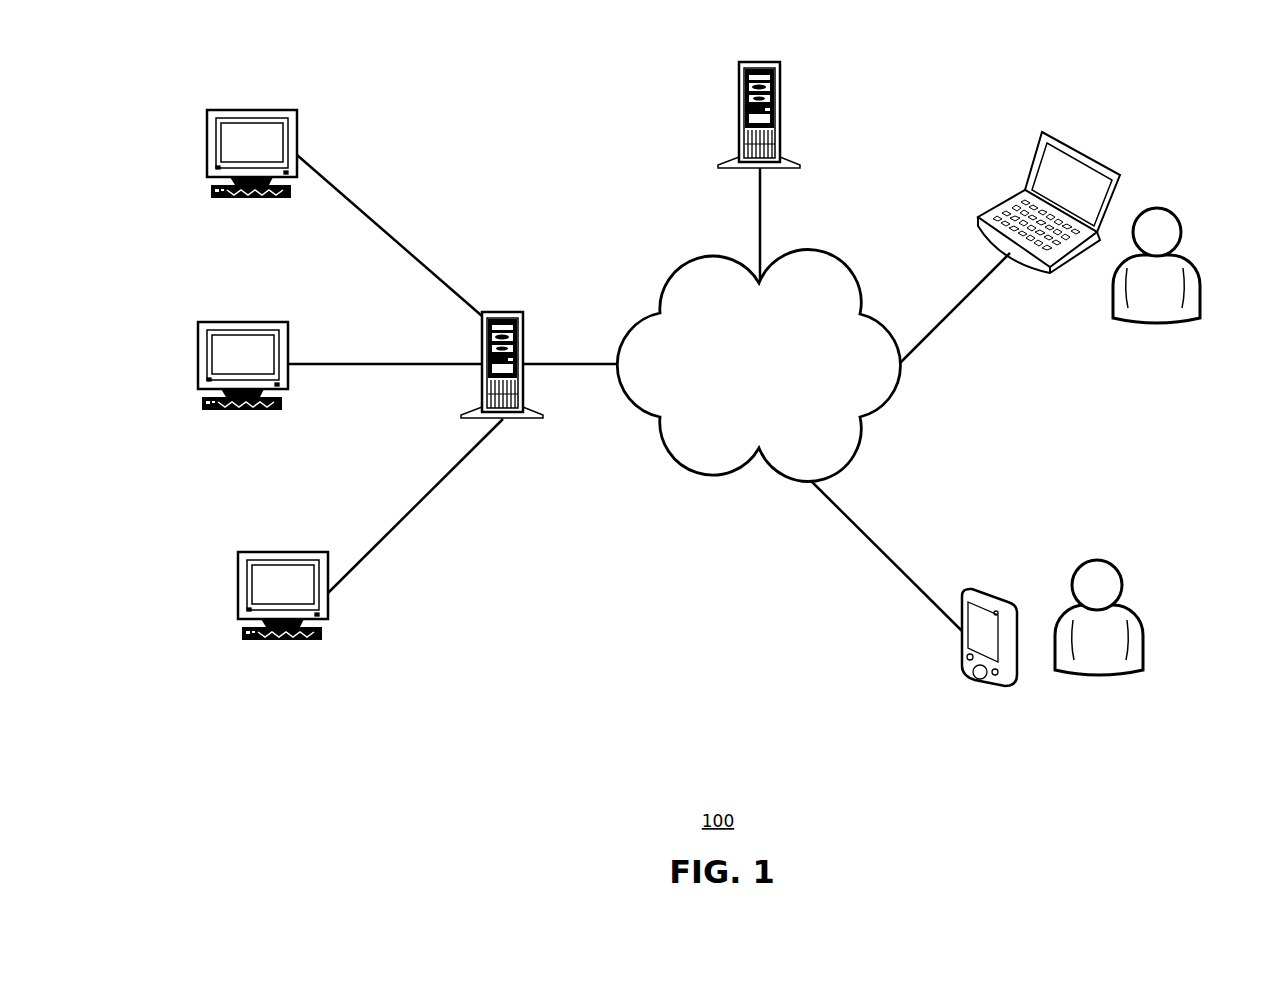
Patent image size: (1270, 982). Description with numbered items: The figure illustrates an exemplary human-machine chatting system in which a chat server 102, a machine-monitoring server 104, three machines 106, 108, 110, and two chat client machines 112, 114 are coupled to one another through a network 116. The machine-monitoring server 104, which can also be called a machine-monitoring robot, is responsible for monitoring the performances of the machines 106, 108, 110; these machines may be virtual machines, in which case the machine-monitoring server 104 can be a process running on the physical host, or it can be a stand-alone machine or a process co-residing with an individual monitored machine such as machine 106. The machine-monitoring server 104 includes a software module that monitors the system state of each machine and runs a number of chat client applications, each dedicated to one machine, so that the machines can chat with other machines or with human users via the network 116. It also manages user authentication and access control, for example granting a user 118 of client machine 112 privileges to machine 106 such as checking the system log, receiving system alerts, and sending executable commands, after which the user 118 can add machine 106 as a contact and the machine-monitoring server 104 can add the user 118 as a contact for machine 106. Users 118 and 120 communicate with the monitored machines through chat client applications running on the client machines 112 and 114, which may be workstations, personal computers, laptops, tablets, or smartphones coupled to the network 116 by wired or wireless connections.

The chat server 102 is at (760, 62).
The machine-monitoring server 104 is at (500, 312).
The machine 106 is at (250, 110).
The machine 108 is at (243, 322).
The machine 110 is at (283, 552).
The chat client machine 112 is at (1088, 156).
The chat client machine 114 is at (960, 670).
The network 116 is at (758, 366).
The user 118 is at (1155, 322).
The user 120 is at (1143, 617).